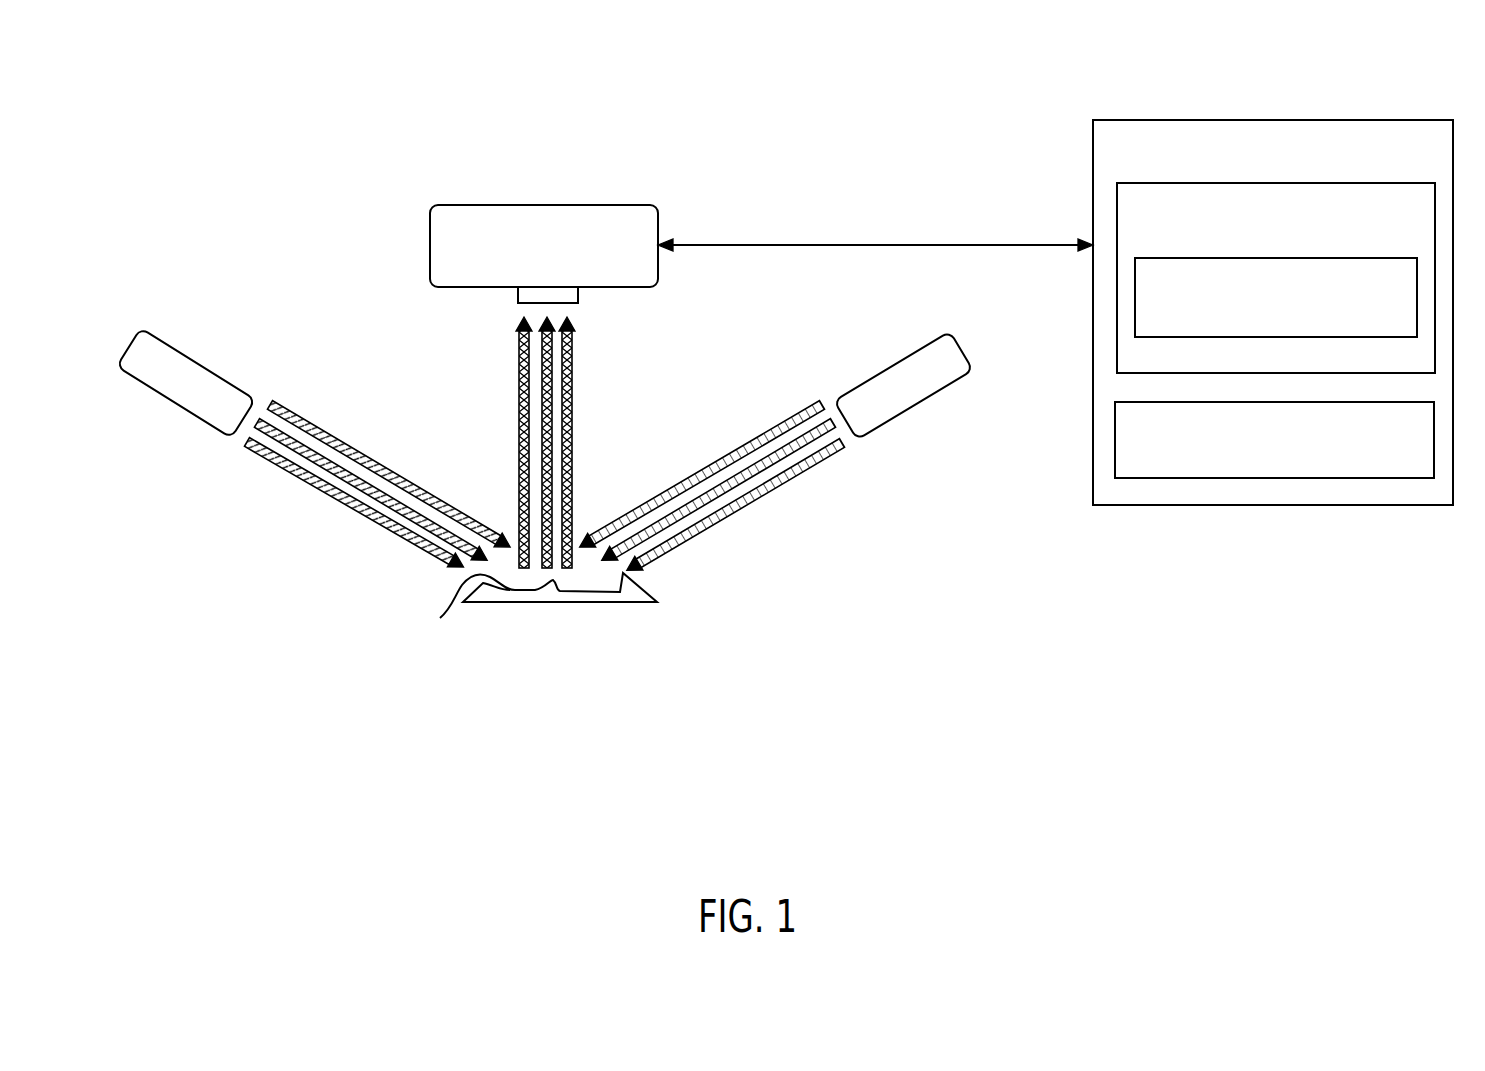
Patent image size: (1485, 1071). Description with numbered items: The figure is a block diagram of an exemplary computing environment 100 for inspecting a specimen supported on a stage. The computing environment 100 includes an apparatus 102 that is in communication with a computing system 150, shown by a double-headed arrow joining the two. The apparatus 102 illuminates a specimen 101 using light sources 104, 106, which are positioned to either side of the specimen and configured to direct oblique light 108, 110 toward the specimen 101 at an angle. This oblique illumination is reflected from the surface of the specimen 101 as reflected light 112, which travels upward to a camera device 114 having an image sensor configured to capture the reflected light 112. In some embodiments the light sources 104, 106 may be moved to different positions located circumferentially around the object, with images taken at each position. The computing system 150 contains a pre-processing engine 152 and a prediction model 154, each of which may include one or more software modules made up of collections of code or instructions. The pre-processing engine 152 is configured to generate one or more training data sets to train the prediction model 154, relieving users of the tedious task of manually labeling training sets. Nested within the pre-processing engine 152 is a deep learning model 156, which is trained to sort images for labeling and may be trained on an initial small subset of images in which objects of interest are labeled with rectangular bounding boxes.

The computing environment 100 is at (350, 62).
The specimen 101 is at (440, 618).
The apparatus 102 is at (270, 205).
The light source 104 is at (228, 385).
The light source 106 is at (920, 385).
The oblique light 108 is at (340, 490).
The oblique light 110 is at (727, 510).
The reflected light 112 is at (578, 422).
The camera device 114 is at (623, 217).
The computing system 150 is at (1315, 156).
The pre-processing engine 152 is at (1400, 219).
The prediction model 154 is at (1368, 452).
The deep learning model 156 is at (1393, 309).